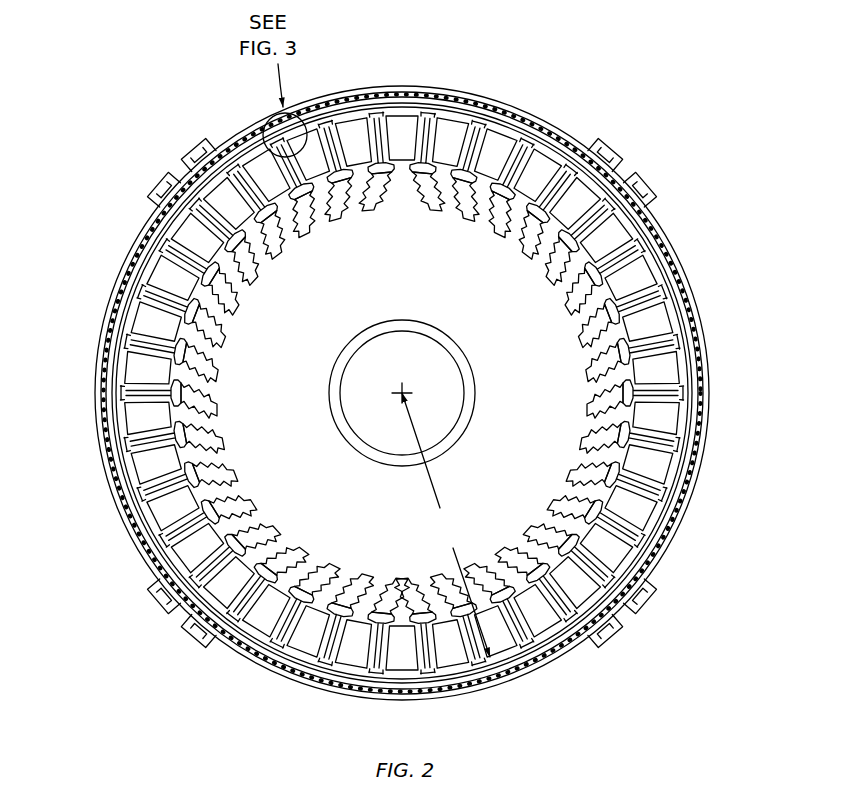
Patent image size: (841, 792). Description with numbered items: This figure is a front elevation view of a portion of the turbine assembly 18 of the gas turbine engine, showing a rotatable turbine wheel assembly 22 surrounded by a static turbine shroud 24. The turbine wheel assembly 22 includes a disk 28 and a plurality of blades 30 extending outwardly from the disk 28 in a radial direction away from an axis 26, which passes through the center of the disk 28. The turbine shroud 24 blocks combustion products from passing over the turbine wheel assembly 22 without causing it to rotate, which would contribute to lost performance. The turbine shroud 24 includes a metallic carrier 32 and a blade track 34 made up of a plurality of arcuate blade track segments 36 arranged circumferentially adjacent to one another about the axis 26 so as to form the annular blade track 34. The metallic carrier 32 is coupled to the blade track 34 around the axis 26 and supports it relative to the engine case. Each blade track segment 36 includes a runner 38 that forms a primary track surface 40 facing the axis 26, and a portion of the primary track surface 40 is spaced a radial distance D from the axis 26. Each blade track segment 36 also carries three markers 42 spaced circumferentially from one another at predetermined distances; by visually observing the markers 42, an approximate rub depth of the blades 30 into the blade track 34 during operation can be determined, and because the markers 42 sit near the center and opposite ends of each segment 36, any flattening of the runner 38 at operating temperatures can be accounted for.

The turbine assembly 18 is at (566, 116).
The turbine wheel assembly 22 is at (402, 418).
The turbine shroud 24 is at (688, 257).
The axis 26 is at (396, 391).
The disk 28 is at (478, 392).
The blades 30 is at (580, 258).
The metallic carrier 32 is at (456, 86).
The blade track 34 is at (165, 232).
The blade track segments 36 is at (136, 352).
The runner 38 is at (122, 336).
The primary track surface 40 is at (432, 667).
The markers 42 is at (270, 142).
The radial distance D is at (446, 525).